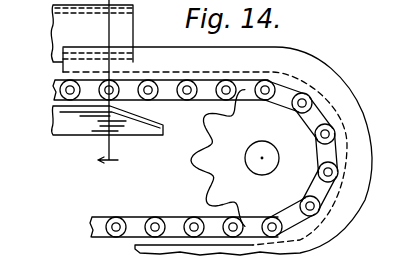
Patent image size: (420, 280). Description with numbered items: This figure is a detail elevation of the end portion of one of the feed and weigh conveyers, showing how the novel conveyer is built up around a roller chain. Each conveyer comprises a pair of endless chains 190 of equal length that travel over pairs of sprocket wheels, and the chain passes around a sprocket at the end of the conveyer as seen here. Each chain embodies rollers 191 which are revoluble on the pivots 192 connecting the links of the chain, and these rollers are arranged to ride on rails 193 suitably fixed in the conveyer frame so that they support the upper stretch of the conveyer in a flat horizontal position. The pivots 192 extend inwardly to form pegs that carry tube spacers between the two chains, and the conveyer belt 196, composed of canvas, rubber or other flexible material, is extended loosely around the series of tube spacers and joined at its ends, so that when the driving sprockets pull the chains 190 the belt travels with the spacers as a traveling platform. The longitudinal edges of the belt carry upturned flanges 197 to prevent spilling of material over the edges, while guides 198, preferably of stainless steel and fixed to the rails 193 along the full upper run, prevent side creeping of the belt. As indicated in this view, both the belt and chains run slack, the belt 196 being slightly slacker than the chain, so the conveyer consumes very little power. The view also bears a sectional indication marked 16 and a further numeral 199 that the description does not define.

The endless chains 190 is at (312, 194).
The rollers 191 is at (163, 106).
The pivots 192 is at (263, 100).
The rails 193 is at (92, 137).
The conveyer belt 196 is at (287, 75).
The upturned flanges 197 is at (333, 73).
The guides 198 is at (125, 32).
The drive unit 199 is at (355, 2).
The section line for FIG. 16 is at (121, 85).